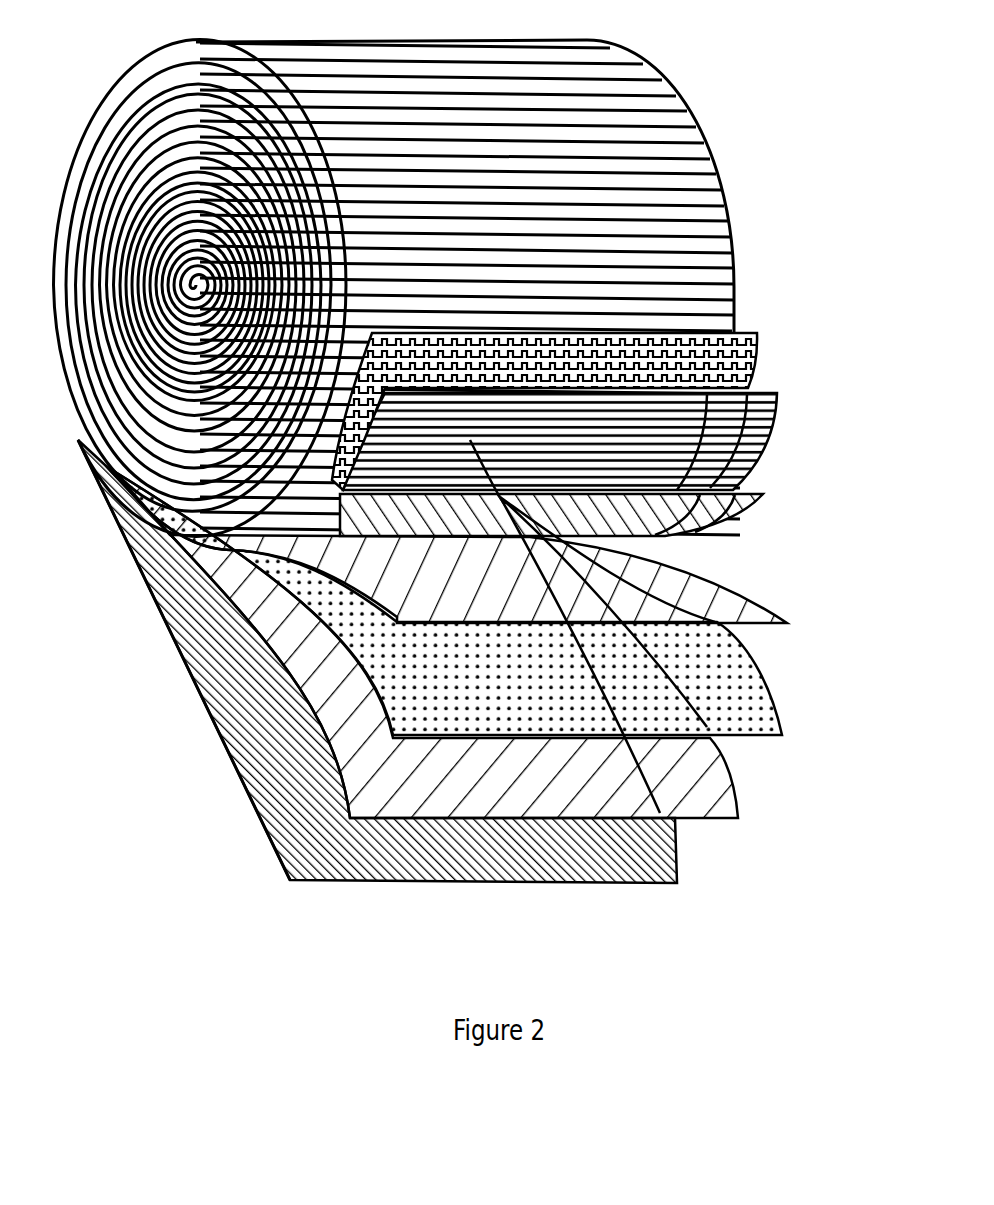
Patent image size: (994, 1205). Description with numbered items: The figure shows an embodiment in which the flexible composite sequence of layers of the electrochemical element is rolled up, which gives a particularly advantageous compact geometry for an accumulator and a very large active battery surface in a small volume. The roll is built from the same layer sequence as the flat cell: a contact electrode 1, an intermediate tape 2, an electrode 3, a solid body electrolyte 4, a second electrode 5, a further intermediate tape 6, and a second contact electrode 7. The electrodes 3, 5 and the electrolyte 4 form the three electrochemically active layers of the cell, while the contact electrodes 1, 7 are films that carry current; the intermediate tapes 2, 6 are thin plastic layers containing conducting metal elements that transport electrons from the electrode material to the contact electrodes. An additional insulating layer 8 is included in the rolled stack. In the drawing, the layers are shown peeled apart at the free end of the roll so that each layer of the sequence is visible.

The contact electrode 1 is at (782, 428).
The intermediate tape 2 is at (755, 517).
The electrode 3 is at (770, 603).
The electrolyte 4 is at (780, 692).
The electrode 5 is at (742, 787).
The intermediate tape 6 is at (683, 872).
The contact electrode 7 is at (723, 178).
The insulating layer 8 is at (770, 352).